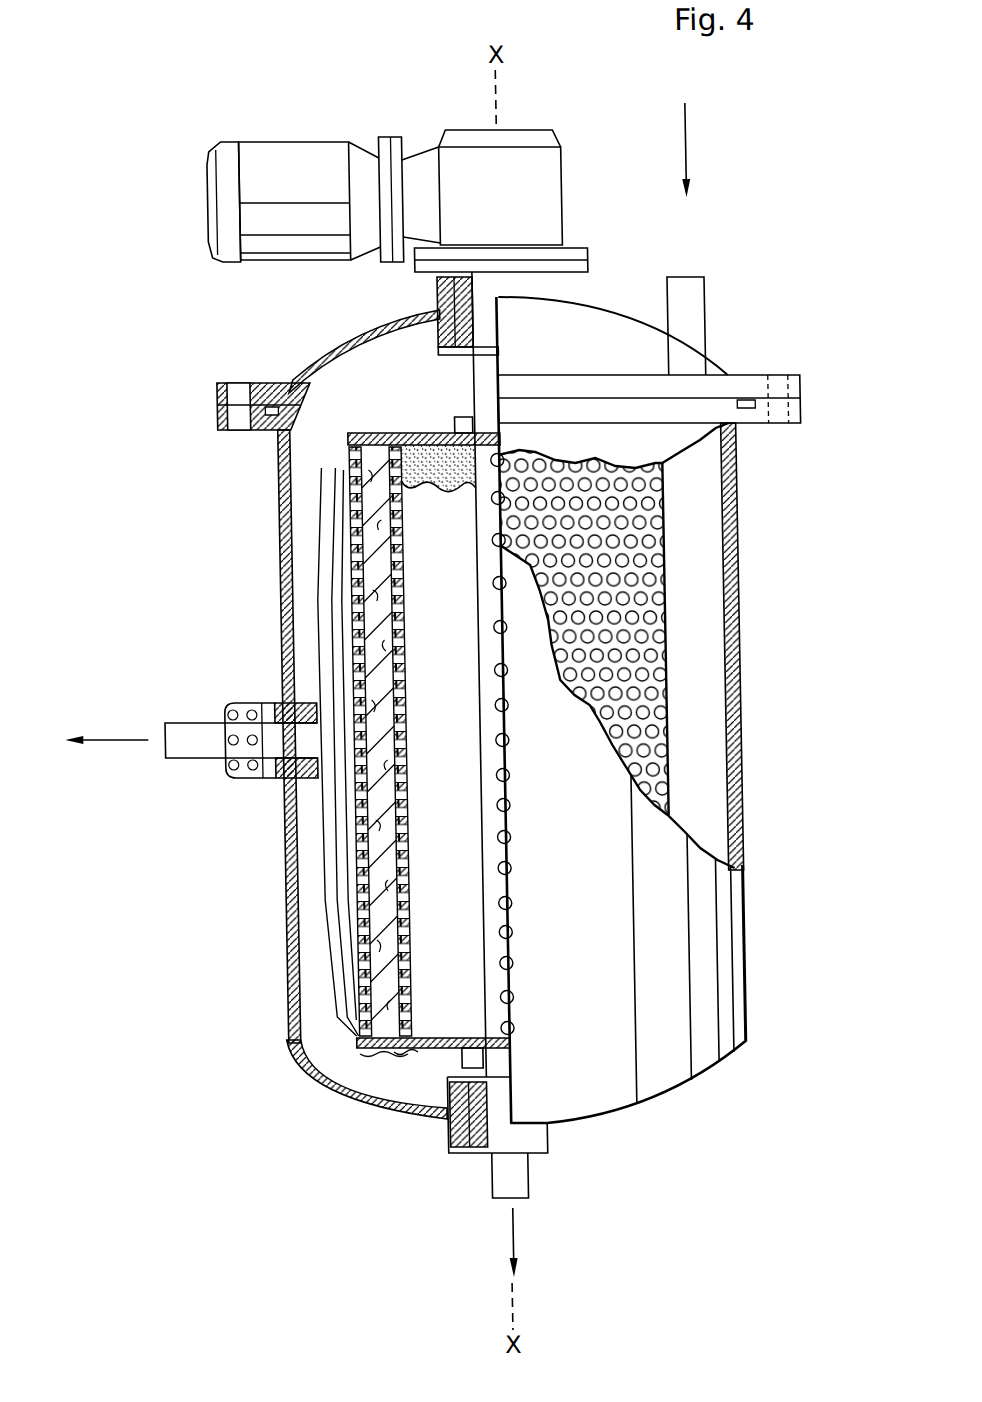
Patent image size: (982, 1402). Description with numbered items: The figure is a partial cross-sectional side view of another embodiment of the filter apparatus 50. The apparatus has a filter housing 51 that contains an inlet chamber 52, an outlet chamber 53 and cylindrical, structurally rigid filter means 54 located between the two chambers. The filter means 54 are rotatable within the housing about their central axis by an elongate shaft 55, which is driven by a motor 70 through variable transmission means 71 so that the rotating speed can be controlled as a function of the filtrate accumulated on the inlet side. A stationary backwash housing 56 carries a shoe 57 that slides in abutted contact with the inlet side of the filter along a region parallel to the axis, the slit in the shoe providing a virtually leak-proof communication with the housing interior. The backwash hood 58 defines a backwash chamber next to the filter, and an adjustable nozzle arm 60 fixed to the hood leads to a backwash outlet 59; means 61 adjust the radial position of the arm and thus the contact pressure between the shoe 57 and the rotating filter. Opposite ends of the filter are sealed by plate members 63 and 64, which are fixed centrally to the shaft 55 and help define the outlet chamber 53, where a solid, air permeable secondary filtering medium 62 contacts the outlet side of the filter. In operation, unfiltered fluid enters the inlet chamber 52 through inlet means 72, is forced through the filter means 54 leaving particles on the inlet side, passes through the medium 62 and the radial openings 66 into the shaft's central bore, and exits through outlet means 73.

The filter apparatus 50 is at (781, 347).
The filter housing 51 is at (270, 560).
The inlet chamber 52 is at (692, 690).
The outlet chamber 53 is at (416, 930).
The cylindrical filter means 54 is at (368, 1052).
The elongate shaft 55 is at (468, 967).
The stationary backwash housing 56 is at (241, 811).
The shoe 57 is at (337, 638).
The backwash hood 58 is at (298, 857).
The backwash outlet 59 is at (152, 745).
The adjustable nozzle arm 60 is at (179, 723).
The means for adjusting a radial position 61 is at (213, 772).
The secondary filtering medium 62 is at (404, 482).
The plate member 63 is at (402, 433).
The plate member 64 is at (411, 1050).
The radial openings 66 is at (494, 930).
The motor 70 is at (282, 147).
The variable transmission means 71 is at (453, 130).
The inlet means 72 is at (690, 277).
The outlet means 73 is at (500, 1198).